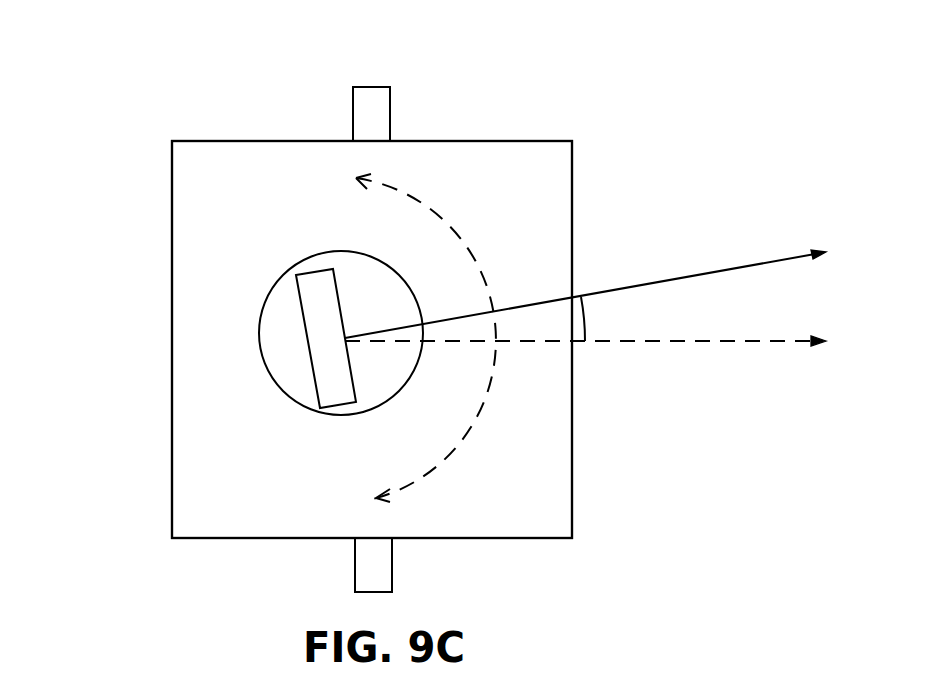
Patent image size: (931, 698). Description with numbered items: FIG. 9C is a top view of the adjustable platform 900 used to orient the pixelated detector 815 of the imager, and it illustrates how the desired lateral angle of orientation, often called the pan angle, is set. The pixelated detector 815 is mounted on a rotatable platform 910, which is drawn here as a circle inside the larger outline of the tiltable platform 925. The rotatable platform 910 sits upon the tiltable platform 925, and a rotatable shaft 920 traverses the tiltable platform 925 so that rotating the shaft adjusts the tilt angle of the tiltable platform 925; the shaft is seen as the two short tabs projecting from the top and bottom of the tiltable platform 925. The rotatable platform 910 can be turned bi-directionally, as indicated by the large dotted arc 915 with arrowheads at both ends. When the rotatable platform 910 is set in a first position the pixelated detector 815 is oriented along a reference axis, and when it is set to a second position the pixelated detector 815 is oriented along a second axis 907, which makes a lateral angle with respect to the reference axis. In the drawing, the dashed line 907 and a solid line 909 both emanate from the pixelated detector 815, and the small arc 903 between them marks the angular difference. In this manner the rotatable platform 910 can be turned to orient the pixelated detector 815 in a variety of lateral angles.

The adjustable platform 900 is at (93, 128).
The tiltable platform 925 is at (461, 132).
The rotatable shaft 920 is at (372, 82).
The rotatable platform 910 is at (260, 320).
The pixelated detector 815 is at (294, 299).
The dotted line 915 is at (470, 232).
The deflected beam path 909 is at (630, 280).
The second axis 907 is at (713, 335).
The deflection angle 903 is at (595, 318).